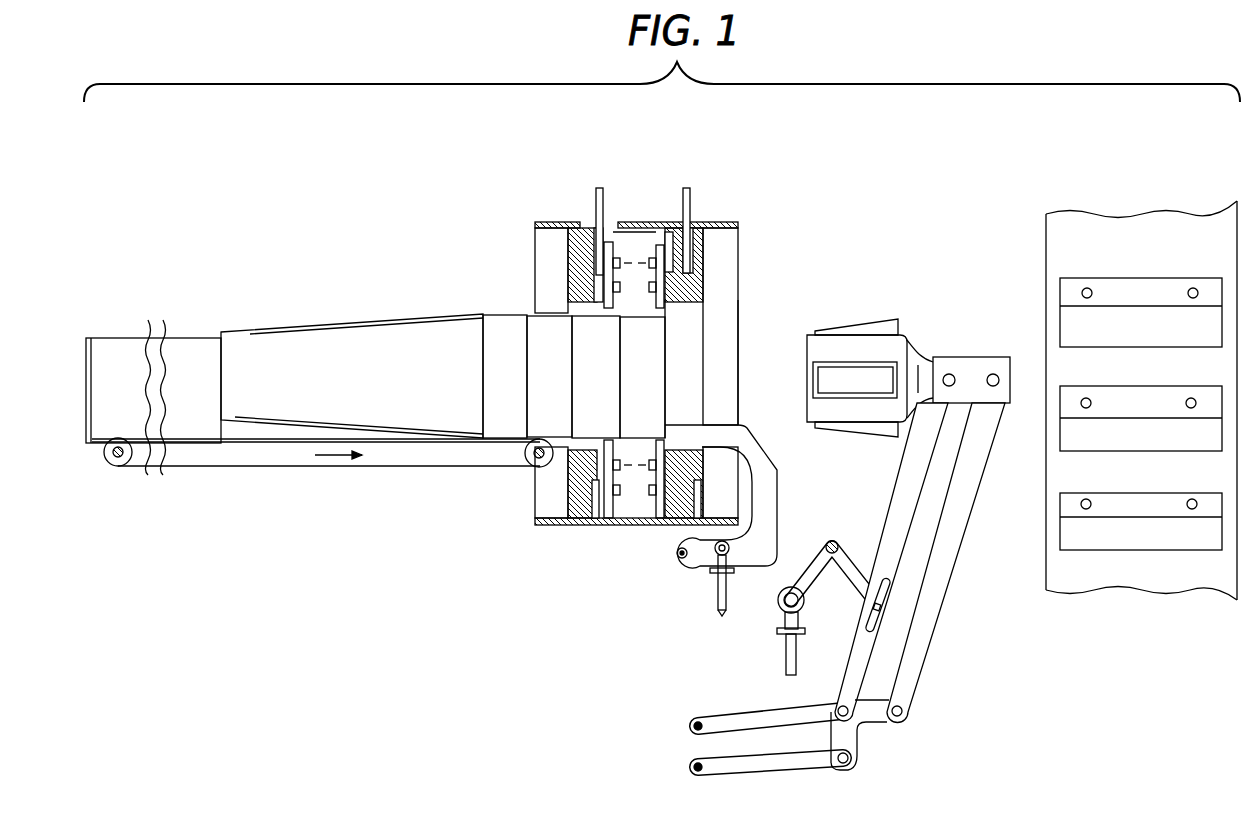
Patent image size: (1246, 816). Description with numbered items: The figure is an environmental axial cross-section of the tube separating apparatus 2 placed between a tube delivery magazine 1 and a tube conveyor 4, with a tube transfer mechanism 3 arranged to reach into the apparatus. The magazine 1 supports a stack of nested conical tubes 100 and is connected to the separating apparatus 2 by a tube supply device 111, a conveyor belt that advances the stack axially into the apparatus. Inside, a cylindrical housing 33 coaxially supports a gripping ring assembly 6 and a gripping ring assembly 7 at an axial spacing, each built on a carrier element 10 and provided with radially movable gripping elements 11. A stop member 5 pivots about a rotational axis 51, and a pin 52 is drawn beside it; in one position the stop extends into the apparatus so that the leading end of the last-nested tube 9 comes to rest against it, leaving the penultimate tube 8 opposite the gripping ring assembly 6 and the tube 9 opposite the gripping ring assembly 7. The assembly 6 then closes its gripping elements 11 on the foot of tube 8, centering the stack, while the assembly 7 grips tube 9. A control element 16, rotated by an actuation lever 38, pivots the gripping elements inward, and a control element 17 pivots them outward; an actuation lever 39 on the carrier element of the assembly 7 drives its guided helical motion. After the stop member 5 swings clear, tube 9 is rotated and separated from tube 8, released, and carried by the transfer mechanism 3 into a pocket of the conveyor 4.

The tube delivery magazine 1 is at (290, 300).
The tube separating apparatus 2 is at (640, 190).
The tube transfer mechanism 3 is at (915, 323).
The tube conveyor 4 is at (1125, 207).
The stop member 5 is at (770, 478).
The gripping ring assembly 6 is at (560, 540).
The gripping ring assembly 7 is at (660, 530).
The penultimate tube 8 is at (578, 404).
The last-nested tube 9 is at (648, 410).
The carrier element 10 is at (576, 230).
The gripping elements 11 is at (637, 240).
The control element 16 is at (667, 232).
The control element 17 is at (714, 230).
The cylindrical housing 33 is at (740, 224).
The actuation lever 38 is at (599, 188).
The actuation lever 39 is at (690, 190).
The rotational axis 51 is at (682, 560).
The pin 52 is at (726, 612).
The nested conical tubes 100 is at (377, 318).
The tube supply device 111 is at (222, 466).